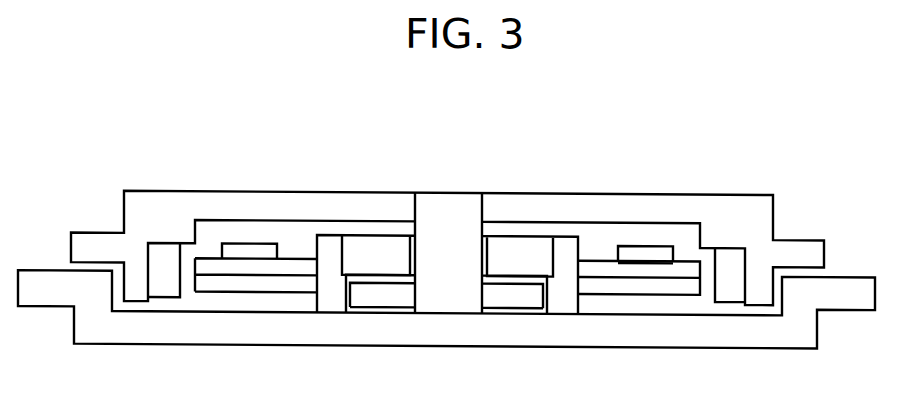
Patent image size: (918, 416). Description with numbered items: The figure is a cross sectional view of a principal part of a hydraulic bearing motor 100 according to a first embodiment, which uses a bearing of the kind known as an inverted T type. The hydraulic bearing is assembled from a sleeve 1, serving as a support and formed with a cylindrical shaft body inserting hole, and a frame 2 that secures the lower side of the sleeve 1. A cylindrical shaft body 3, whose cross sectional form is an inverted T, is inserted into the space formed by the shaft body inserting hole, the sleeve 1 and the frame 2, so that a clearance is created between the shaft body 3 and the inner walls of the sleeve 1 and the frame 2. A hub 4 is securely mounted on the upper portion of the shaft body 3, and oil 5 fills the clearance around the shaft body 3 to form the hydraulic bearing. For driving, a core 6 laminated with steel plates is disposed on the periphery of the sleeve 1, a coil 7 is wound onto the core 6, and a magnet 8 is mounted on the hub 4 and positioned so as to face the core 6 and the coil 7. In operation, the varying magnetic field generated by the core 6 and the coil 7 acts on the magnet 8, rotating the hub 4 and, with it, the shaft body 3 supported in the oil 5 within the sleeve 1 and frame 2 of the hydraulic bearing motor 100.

The hydraulic bearing motor 100 is at (681, 100).
The sleeve 1 is at (518, 247).
The frame 2 is at (527, 343).
The shaft body 3 is at (454, 197).
The hub 4 is at (337, 196).
The oil 5 is at (378, 278).
The core 6 is at (585, 259).
The coil 7 is at (641, 249).
The magnet 8 is at (730, 253).